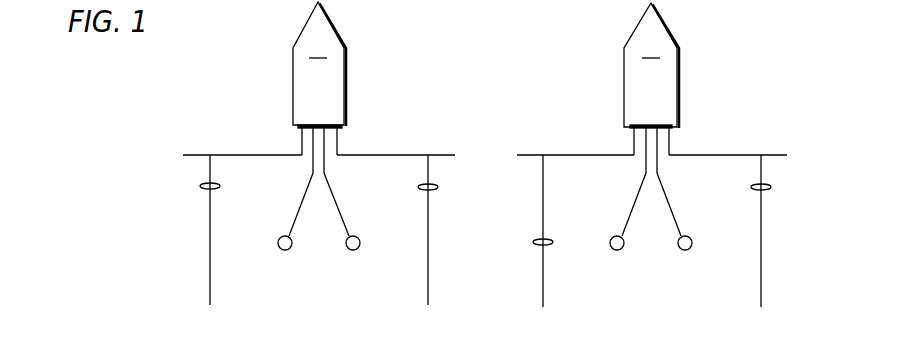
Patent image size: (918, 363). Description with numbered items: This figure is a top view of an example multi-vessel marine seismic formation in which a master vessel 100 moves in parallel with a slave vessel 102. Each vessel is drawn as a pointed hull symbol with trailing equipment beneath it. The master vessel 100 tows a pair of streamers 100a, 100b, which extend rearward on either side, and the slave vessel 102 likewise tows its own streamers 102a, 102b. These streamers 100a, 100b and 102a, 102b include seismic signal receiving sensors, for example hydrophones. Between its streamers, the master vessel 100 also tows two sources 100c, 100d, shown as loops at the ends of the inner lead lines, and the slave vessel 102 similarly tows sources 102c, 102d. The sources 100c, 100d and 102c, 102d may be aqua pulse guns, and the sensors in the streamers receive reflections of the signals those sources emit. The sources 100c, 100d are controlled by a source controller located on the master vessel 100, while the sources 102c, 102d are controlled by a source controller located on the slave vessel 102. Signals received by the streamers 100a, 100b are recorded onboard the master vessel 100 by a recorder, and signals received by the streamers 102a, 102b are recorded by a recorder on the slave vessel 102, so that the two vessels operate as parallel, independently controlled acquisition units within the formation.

The master vessel 100 is at (336, 106).
The streamer 100a is at (200, 186).
The streamer 100b is at (438, 187).
The source 100c is at (280, 264).
The source 100d is at (358, 264).
The slave vessel 102 is at (669, 106).
The streamer 102a is at (533, 242).
The streamer 102b is at (771, 187).
The source 102c is at (612, 266).
The source 102d is at (690, 266).